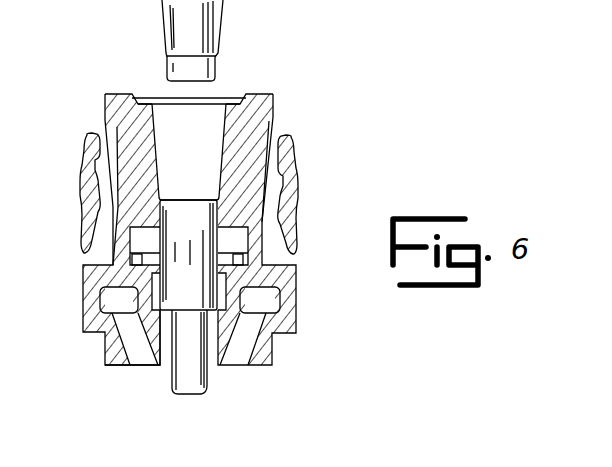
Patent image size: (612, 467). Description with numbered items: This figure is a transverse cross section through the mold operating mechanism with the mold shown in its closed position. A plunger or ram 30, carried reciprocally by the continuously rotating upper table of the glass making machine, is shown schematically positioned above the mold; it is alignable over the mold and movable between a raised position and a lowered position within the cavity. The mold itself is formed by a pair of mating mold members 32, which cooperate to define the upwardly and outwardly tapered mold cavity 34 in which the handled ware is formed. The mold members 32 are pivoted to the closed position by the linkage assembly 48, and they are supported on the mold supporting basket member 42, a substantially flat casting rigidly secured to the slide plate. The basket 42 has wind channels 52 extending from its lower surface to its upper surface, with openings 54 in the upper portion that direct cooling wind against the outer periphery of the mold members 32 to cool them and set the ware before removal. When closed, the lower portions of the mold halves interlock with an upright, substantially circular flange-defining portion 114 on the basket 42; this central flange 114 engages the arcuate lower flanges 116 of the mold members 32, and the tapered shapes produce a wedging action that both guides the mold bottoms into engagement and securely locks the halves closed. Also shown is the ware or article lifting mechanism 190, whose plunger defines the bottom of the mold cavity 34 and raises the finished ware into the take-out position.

The plunger or ram 30 is at (153, 40).
The mold member 32 is at (306, 233).
The mold cavity 34 is at (216, 127).
The mold supporting basket member 42 is at (135, 382).
The linkage assembly 48 is at (192, 193).
The wind channel 52 is at (187, 376).
The opening 54 is at (197, 288).
The flange-defining portion 114 is at (242, 254).
The arcuate lower flange 116 is at (178, 243).
The ware or article lifting mechanism 190 is at (216, 381).